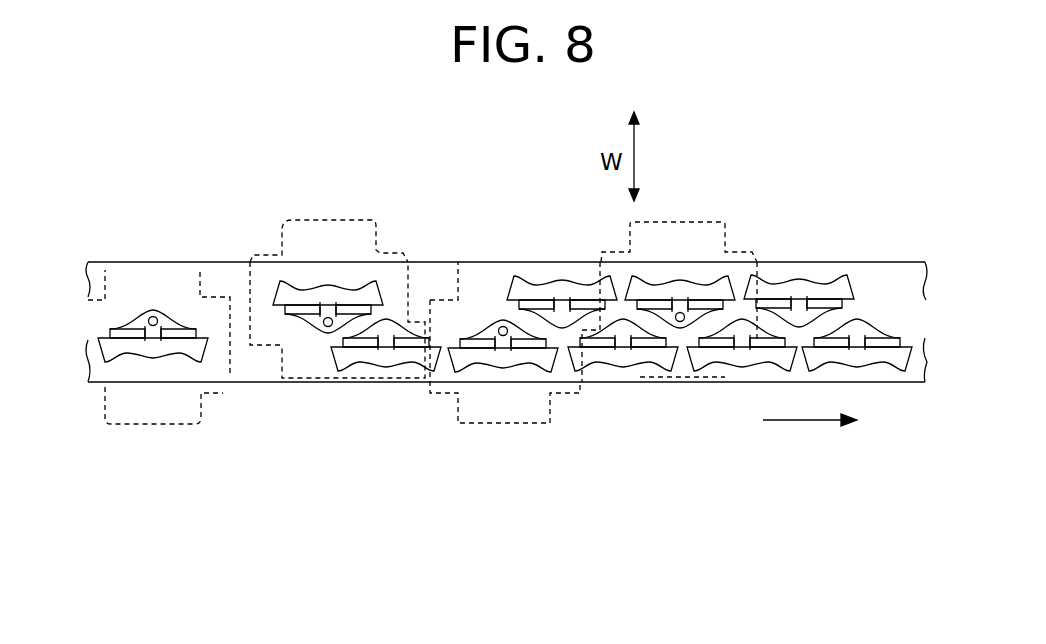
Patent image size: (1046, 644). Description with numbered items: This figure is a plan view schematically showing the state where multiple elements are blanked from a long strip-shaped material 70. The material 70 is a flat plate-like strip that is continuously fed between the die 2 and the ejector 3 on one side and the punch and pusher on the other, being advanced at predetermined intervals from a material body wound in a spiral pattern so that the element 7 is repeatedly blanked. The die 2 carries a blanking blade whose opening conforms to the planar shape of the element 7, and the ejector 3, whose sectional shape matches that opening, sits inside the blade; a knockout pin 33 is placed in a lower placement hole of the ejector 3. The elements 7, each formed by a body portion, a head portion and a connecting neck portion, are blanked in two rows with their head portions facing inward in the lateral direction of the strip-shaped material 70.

The die 2 is at (353, 235).
The ejector 3 is at (328, 308).
The CVT belt element 7 is at (500, 380).
The knockout pin 33 is at (314, 335).
The long strip-shaped material 70 is at (878, 262).